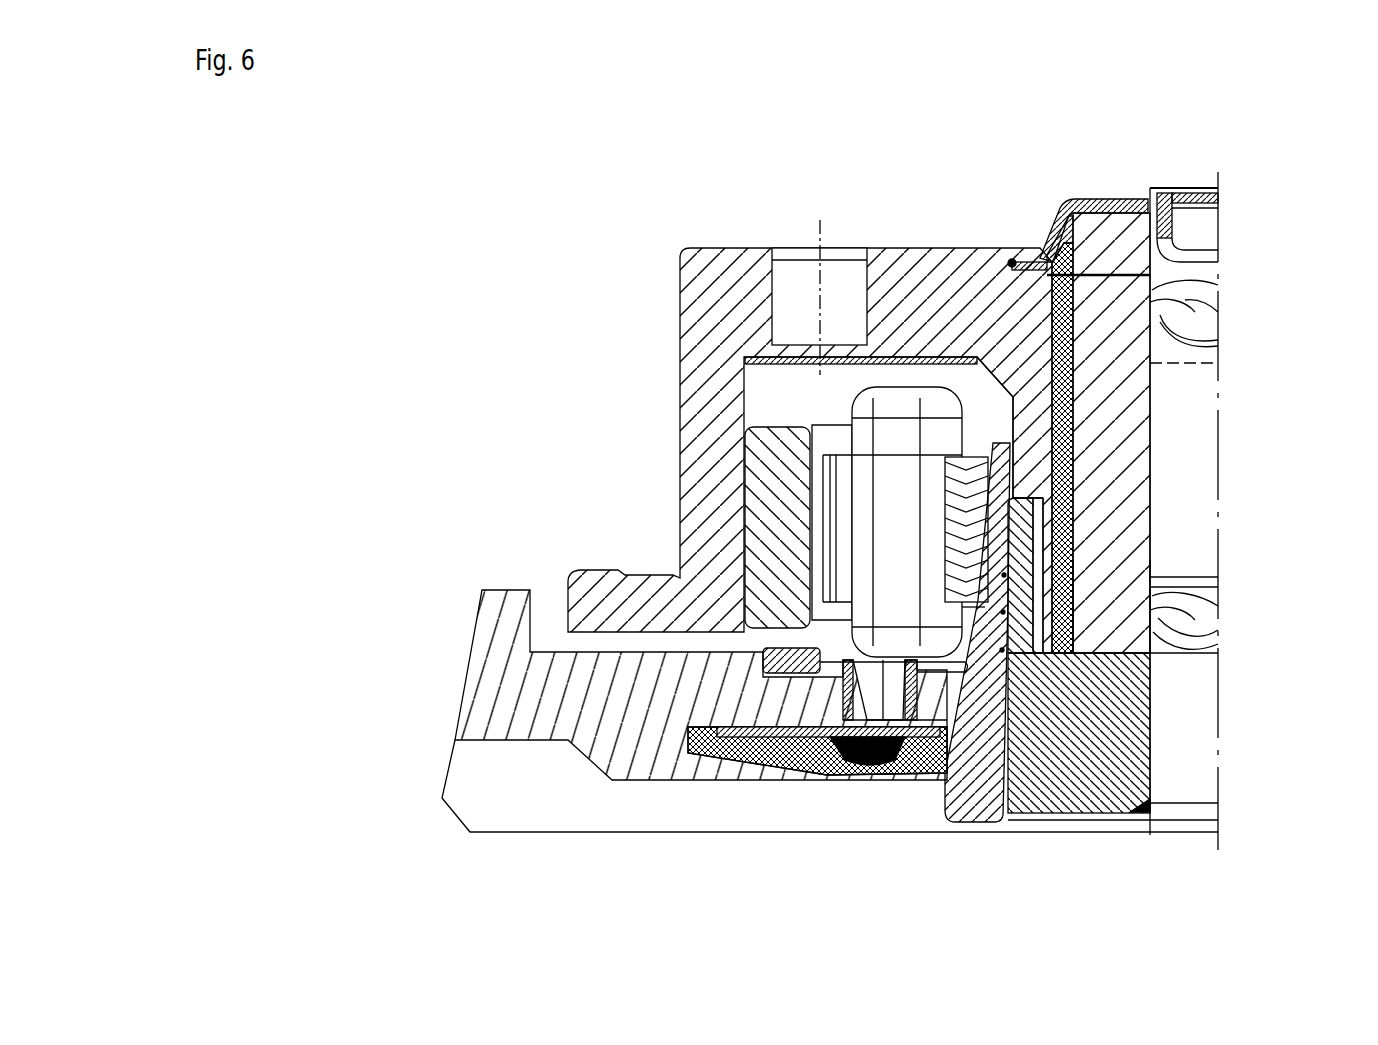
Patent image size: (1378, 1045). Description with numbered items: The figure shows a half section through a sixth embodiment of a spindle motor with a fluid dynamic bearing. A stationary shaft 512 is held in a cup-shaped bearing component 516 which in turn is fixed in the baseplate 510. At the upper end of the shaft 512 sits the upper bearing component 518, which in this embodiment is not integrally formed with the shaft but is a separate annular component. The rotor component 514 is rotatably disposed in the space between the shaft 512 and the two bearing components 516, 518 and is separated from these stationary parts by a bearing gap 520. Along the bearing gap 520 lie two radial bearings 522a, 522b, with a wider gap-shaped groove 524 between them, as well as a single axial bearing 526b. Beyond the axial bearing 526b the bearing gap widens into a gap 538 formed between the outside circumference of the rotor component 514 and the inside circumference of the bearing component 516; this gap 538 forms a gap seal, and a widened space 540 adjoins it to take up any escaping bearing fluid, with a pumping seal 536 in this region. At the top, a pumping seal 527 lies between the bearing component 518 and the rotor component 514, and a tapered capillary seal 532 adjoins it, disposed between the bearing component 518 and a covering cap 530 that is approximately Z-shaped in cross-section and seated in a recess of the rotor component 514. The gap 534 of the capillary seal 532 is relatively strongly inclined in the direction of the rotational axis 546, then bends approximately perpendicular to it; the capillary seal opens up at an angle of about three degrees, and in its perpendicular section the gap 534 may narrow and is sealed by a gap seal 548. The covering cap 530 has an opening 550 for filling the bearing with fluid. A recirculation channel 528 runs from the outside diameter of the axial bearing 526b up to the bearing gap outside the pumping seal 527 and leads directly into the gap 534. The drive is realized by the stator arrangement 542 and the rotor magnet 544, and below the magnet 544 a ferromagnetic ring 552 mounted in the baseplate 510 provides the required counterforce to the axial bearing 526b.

The baseplate 510 is at (573, 705).
The shaft 512 is at (1190, 745).
The rotor component 514 is at (780, 515).
The bearing component 516 is at (1125, 770).
The bearing component 518 is at (1078, 232).
The bearing gap 520 is at (1103, 620).
The radial bearing 522a is at (1205, 303).
The radial bearing 522b is at (1210, 612).
The groove 524 is at (1150, 424).
The axial bearing 526b is at (1130, 675).
The pumping seal 527 is at (1100, 262).
The recirculation channel 528 is at (1040, 375).
The covering cap 530 is at (1053, 250).
The capillary seal 532 is at (1110, 265).
The gap 534 is at (1075, 238).
The pumping seal 536 is at (1045, 640).
The gap 538 is at (1000, 655).
The space 540 is at (960, 450).
The stator arrangement 542 is at (858, 395).
The magnet 544 is at (745, 308).
The rotational axis 546 is at (1167, 192).
The labyrinth seal 548 is at (1125, 235).
The opening 550 is at (1063, 262).
The ferromagnetic ring 552 is at (810, 660).